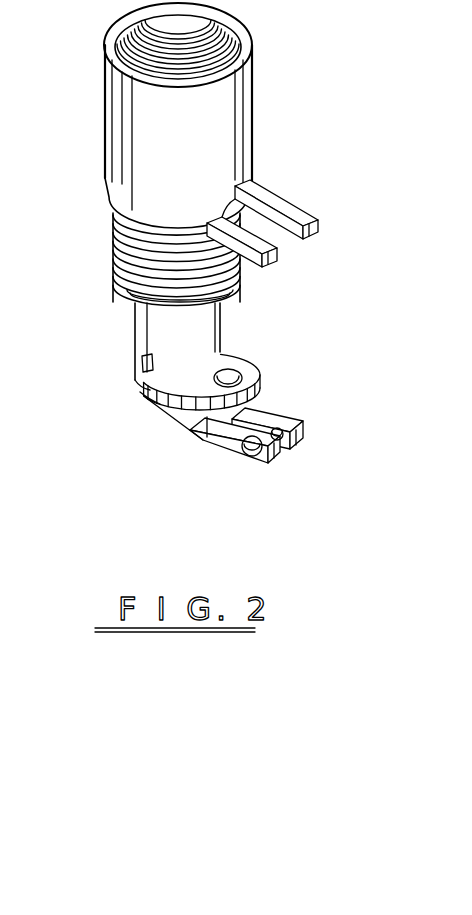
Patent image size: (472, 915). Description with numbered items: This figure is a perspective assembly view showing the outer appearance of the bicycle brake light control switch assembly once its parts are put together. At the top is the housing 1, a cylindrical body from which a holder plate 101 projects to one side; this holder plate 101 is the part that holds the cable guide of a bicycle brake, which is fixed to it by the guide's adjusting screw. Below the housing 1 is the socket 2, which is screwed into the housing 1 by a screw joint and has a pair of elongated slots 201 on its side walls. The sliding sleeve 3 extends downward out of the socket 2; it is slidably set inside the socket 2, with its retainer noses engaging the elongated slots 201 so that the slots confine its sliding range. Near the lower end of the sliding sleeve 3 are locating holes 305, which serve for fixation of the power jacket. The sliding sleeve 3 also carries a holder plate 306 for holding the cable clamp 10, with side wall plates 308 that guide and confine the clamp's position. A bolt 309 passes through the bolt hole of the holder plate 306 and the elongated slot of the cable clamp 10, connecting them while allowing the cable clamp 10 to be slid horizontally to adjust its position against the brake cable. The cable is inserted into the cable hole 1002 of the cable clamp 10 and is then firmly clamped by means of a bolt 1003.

The housing 1 is at (206, 115).
The holder plate 101 is at (277, 202).
The socket 2 is at (140, 259).
The elongated slots 201 is at (277, 247).
The sliding sleeve 3 is at (215, 346).
The locating holes 305 is at (99, 365).
The holder plate 306 is at (274, 362).
The cable clamp 10 is at (247, 382).
The cable hole 1002 is at (337, 419).
The bolt 1003 is at (232, 482).
The side wall plates 308 is at (216, 439).
The bolt 309 is at (108, 408).